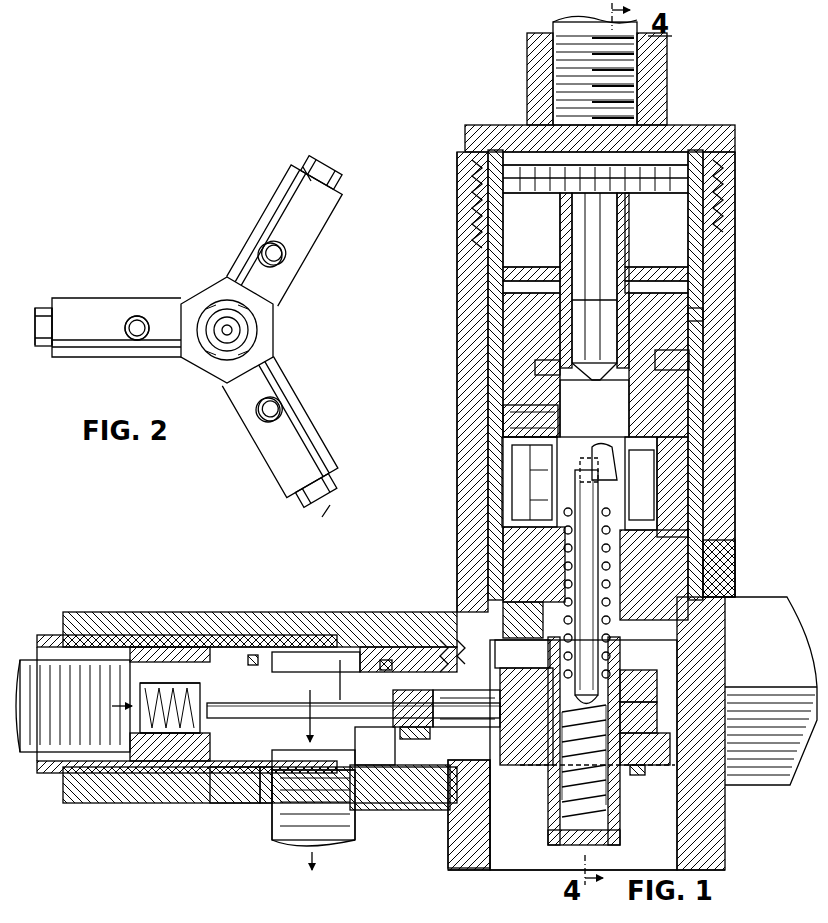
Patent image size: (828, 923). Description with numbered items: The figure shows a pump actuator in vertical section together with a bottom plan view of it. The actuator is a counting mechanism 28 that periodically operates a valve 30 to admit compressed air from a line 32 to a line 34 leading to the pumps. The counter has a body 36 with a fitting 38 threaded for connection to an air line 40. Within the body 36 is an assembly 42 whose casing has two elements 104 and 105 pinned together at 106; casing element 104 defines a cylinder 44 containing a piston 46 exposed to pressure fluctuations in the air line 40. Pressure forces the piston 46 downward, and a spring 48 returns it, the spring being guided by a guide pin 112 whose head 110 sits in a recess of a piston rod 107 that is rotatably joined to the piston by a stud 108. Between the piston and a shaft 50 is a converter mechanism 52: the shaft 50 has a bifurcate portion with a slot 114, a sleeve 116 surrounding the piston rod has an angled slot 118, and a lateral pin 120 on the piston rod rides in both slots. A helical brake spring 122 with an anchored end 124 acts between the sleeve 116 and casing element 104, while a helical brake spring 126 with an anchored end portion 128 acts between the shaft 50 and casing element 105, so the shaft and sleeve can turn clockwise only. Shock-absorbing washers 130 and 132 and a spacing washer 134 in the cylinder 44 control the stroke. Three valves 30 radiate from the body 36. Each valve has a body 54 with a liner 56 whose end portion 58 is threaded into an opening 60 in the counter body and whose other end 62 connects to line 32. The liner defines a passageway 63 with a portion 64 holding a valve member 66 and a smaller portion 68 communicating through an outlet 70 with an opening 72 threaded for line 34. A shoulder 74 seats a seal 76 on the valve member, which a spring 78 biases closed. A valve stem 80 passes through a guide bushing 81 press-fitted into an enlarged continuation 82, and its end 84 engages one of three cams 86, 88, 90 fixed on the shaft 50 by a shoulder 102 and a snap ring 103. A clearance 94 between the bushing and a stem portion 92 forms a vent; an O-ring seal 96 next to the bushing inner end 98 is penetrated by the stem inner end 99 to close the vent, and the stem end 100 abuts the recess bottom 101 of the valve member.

In FIG. 1, the counting mechanism 28 is at (432, 130).
In FIG. 2, the counting mechanism 28 is at (243, 294).
In FIG. 1, the valve 30 is at (768, 795).
In FIG. 2, the valve 30 is at (275, 192).
In FIG. 1, the air line 32 is at (40, 758).
In FIG. 2, the air line 32 is at (328, 172).
In FIG. 1, the air line 34 is at (275, 838).
In FIG. 2, the air line 34 is at (283, 258).
In FIG. 1, the counter body 36 is at (725, 532).
In FIG. 2, the counter body 36 is at (275, 335).
In FIG. 1, the fitting 38 is at (667, 100).
In FIG. 1, the air line 40 is at (553, 62).
In FIG. 1, the assembly 42 is at (710, 395).
In FIG. 1, the cylinder 44 is at (512, 262).
In FIG. 1, the piston 46 is at (648, 192).
In FIG. 1, the spring 48 is at (575, 800).
In FIG. 1, the shaft 50 is at (625, 655).
In FIG. 2, the shaft 50 is at (220, 340).
In FIG. 1, the converter mechanism 52 is at (695, 465).
In FIG. 1, the valve body 54 is at (170, 614).
In FIG. 1, the liner 56 is at (228, 640).
In FIG. 1, the end portion 58 is at (455, 625).
In FIG. 1, the opening 60 is at (480, 768).
In FIG. 1, the other end 62 is at (92, 800).
In FIG. 1, the passageway 63 is at (340, 660).
In FIG. 1, the passageway portion 64 is at (208, 800).
In FIG. 1, the valve member 66 is at (178, 682).
In FIG. 1, the smaller passageway portion 68 is at (285, 665).
In FIG. 1, the outlet 70 is at (330, 720).
In FIG. 1, the opening 72 is at (268, 787).
In FIG. 1, the shoulder 74 is at (255, 718).
In FIG. 1, the seal 76 is at (252, 655).
In FIG. 1, the spring 78 is at (150, 770).
In FIG. 1, the valve stem 80 is at (313, 731).
In FIG. 1, the guide bushing 81 is at (430, 765).
In FIG. 1, the enlarged continuation 82 is at (355, 810).
In FIG. 1, the end 84 is at (512, 705).
In FIG. 2, the end 84 is at (262, 352).
In FIG. 1, the cam 86 is at (657, 688).
In FIG. 1, the cam 88 is at (657, 720).
In FIG. 1, the cam 90 is at (672, 753).
In FIG. 2, the cam 90 is at (258, 322).
In FIG. 1, the valve stem portion 92 is at (440, 685).
In FIG. 1, the clearance 94 is at (395, 660).
In FIG. 1, the O-ring seal 96 is at (385, 765).
In FIG. 1, the inner end 98 is at (400, 692).
In FIG. 1, the inner end 99 is at (410, 732).
In FIG. 1, the end 100 is at (215, 735).
In FIG. 1, the bottom 101 is at (185, 688).
In FIG. 1, the shoulder 102 is at (548, 660).
In FIG. 1, the snap ring 103 is at (638, 772).
In FIG. 1, the casing element 104 is at (703, 312).
In FIG. 1, the casing element 105 is at (725, 560).
In FIG. 1, the pin 106 is at (690, 360).
In FIG. 1, the piston rod 107 is at (582, 280).
In FIG. 1, the stud 108 is at (590, 240).
In FIG. 1, the head 110 is at (604, 448).
In FIG. 1, the guide pin 112 is at (565, 543).
In FIG. 1, the slot 114 is at (535, 498).
In FIG. 1, the sleeve 116 is at (670, 443).
In FIG. 1, the slot 118 is at (512, 465).
In FIG. 1, the pin 120 is at (510, 415).
In FIG. 1, the helical brake spring 122 is at (580, 365).
In FIG. 1, the end 124 is at (535, 368).
In FIG. 1, the helical brake spring 126 is at (655, 600).
In FIG. 1, the end portion 128 is at (497, 608).
In FIG. 1, the shock-absorbing washer 130 is at (690, 158).
In FIG. 1, the shock-absorbing washer 132 is at (503, 287).
In FIG. 1, the spacing washer 134 is at (680, 275).